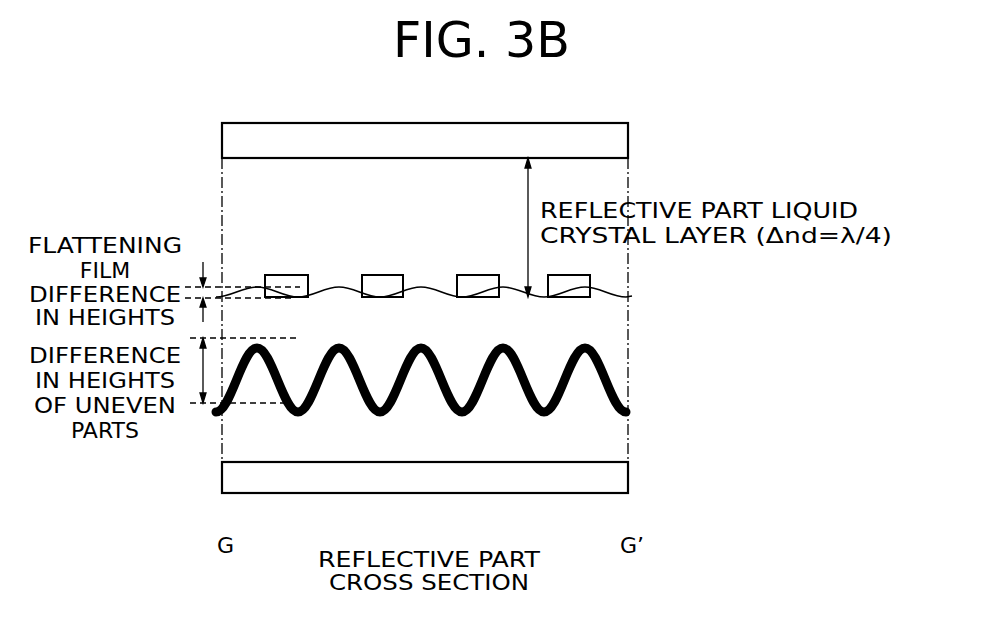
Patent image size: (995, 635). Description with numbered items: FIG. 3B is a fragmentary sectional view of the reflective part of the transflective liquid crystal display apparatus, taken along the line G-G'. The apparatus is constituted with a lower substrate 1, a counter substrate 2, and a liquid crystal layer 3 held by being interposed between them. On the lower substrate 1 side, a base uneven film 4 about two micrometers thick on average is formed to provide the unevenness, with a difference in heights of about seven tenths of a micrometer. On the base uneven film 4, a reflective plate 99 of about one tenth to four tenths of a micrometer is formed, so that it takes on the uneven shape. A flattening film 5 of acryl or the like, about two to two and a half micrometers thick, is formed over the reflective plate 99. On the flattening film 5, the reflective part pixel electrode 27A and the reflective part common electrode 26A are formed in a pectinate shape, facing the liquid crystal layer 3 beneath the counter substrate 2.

The lower substrate 1 is at (630, 472).
The counter substrate 2 is at (612, 133).
The liquid crystal layer 3 is at (610, 168).
The base uneven film 4 is at (612, 436).
The flattening film 5 is at (602, 317).
The reflective part common electrode 26A is at (290, 275).
The reflective part pixel electrode 27A is at (390, 275).
The reflective plate 99 is at (617, 385).